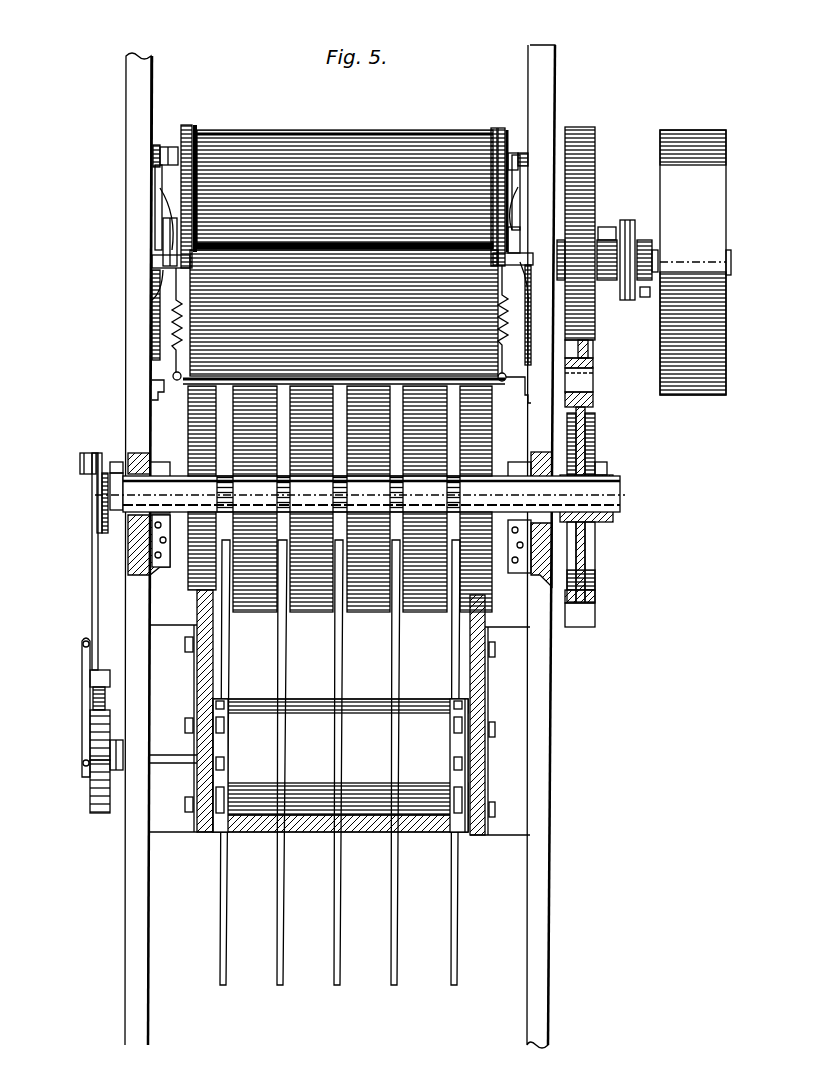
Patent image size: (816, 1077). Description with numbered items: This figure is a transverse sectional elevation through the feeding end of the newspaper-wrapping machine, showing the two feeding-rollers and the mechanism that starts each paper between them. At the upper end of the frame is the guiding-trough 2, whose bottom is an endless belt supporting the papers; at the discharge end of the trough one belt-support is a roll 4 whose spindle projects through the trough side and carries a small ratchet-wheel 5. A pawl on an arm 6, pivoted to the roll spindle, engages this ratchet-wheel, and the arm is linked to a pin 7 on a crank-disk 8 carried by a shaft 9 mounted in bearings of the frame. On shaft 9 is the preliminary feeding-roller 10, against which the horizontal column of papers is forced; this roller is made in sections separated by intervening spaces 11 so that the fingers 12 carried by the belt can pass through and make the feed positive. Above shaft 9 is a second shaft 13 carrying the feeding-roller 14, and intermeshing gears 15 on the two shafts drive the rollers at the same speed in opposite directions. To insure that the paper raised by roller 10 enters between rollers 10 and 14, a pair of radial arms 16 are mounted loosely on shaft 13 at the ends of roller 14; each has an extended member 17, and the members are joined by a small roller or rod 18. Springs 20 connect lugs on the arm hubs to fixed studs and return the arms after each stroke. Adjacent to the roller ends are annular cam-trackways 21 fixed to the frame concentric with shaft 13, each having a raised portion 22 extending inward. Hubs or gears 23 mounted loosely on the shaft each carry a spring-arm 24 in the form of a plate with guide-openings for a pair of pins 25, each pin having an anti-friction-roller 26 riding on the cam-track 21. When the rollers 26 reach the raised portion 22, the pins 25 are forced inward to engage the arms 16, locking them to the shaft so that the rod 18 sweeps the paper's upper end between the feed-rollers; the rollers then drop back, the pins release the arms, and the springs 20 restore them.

The guiding-trough 2 is at (486, 745).
The roll 4 is at (340, 765).
The ratchet-wheel 5 is at (93, 813).
The arm 6 is at (90, 714).
The pin 7 is at (152, 60).
The crank-disk 8 is at (100, 528).
The shaft 9 is at (100, 511).
The preliminary feeding-roller 10 is at (206, 452).
The intervening spaces 11 is at (226, 440).
The fingers 12 is at (280, 649).
The second shaft 13 is at (160, 258).
The feeding-roller 14 is at (280, 152).
The intermeshing gears 15 is at (594, 404).
The radial arms 16 is at (186, 125).
The extended member 17 is at (205, 140).
The small roller or rod 18 is at (345, 240).
The springs 20 is at (176, 330).
The annular trackways or cams 21 is at (155, 323).
The raised portion 22 is at (160, 290).
The hubs or gears 23 is at (170, 239).
The spring-arm 24 is at (160, 190).
The pins 25 is at (172, 148).
The anti-friction-roller 26 is at (153, 158).